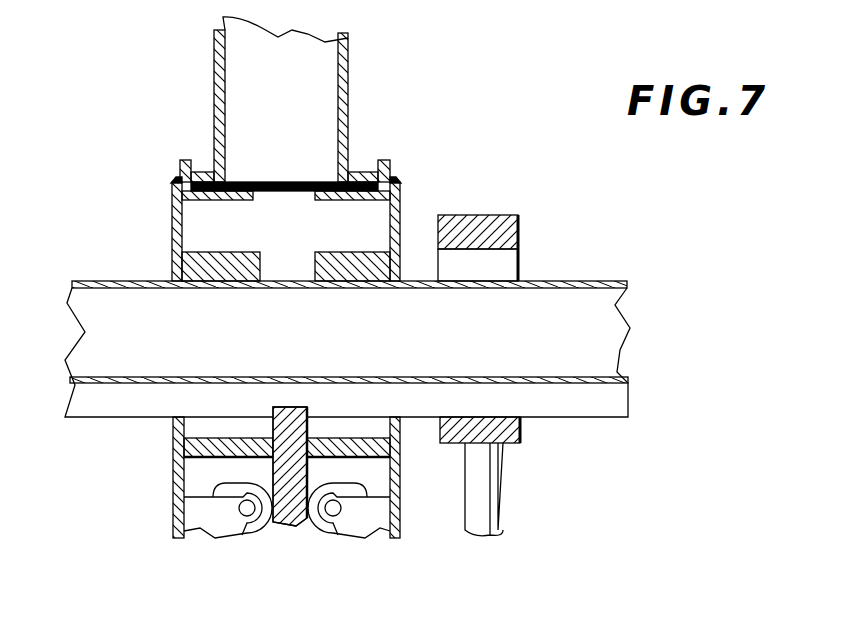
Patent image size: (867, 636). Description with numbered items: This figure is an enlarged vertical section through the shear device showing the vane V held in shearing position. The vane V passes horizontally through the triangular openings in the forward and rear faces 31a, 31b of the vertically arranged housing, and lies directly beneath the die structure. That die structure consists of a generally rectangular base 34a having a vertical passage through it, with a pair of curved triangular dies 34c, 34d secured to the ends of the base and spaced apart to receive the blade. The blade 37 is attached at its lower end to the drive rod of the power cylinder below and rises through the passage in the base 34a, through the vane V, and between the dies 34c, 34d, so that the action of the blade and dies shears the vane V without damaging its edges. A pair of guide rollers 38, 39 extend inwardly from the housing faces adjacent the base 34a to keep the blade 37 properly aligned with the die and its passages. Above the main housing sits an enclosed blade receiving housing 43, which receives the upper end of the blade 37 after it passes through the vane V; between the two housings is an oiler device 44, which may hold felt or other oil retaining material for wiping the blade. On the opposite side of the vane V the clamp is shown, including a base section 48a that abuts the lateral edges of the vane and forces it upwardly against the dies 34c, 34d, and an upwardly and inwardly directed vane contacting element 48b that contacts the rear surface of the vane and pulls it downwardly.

The vane V is at (90, 281).
The blade receiving housing 43 is at (348, 108).
The oiler device 44 is at (300, 182).
The forward face 31a is at (172, 225).
The rear face 31b is at (400, 211).
The die 34c is at (205, 252).
The die 34d is at (368, 222).
The vane contacting element 48b is at (518, 238).
The base section 48a is at (520, 437).
The base 34a is at (213, 458).
The blade 37 is at (307, 410).
The guide roller 38 is at (213, 495).
The guide roller 39 is at (360, 485).